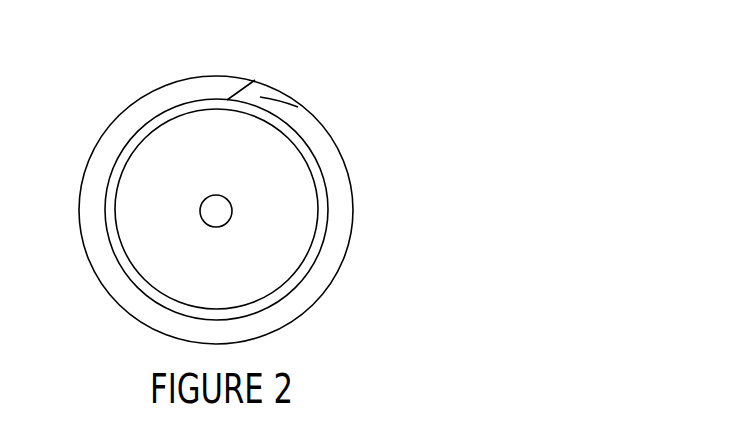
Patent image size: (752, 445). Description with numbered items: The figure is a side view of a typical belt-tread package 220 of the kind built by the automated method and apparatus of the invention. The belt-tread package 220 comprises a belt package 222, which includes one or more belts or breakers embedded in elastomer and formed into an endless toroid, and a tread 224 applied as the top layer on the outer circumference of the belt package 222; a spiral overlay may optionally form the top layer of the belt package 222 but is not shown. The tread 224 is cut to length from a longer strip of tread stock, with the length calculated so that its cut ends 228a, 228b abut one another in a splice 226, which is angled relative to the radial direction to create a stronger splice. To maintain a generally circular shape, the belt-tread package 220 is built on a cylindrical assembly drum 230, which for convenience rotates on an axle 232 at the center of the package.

The belt-tread package 220 is at (137, 87).
The belt package 222 is at (330, 229).
The tread 224 is at (343, 163).
The splice 226 is at (254, 80).
The cut end 228a is at (303, 108).
The cut end 228b is at (227, 100).
The cylindrical assembly drum 230 is at (280, 237).
The axle 232 is at (218, 227).